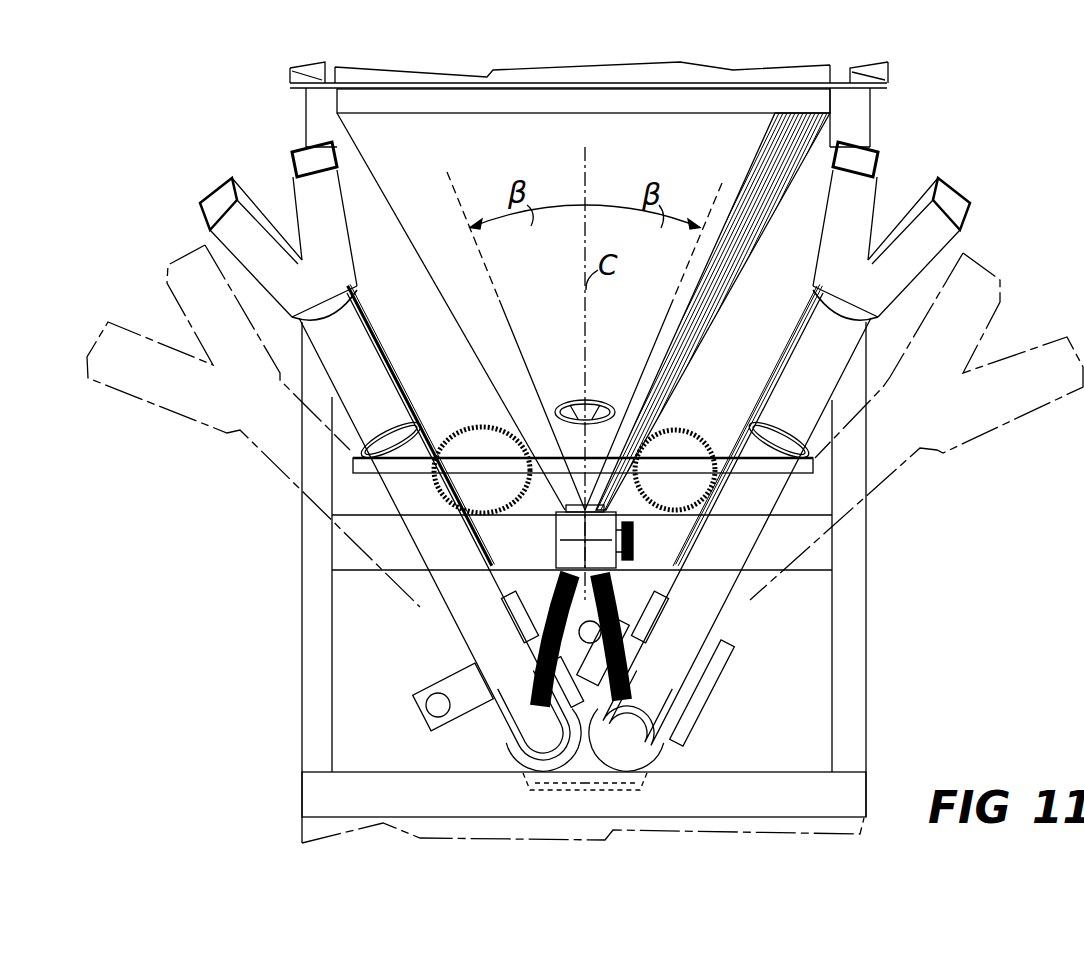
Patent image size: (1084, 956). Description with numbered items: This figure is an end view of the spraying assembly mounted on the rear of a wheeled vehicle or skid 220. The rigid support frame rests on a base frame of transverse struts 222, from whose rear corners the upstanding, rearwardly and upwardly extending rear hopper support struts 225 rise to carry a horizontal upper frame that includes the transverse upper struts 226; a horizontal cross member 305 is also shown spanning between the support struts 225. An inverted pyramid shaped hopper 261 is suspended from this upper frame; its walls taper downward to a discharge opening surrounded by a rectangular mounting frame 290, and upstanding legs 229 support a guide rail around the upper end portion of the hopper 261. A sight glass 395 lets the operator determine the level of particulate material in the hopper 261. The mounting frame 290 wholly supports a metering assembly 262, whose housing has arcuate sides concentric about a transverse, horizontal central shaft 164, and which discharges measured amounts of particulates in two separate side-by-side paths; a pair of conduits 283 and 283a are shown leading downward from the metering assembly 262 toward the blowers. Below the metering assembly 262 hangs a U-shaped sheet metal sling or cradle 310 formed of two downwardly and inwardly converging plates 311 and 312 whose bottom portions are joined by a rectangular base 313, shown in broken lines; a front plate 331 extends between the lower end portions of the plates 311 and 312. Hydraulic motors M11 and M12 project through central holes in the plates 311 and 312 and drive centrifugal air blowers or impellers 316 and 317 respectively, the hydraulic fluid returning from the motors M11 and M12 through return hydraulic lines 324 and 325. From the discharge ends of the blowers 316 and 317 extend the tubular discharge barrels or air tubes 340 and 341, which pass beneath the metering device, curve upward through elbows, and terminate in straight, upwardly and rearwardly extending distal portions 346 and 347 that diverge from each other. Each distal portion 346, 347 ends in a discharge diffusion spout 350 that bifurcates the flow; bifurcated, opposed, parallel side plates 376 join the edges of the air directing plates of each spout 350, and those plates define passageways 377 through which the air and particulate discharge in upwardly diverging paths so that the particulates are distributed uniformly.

The central shaft 164 is at (634, 538).
The wheeled vehicle 220 is at (782, 812).
The transverse struts 222 is at (420, 805).
The rear hopper support struts 225 is at (302, 528).
The transverse upper struts 226 is at (712, 110).
The upstanding legs 229 is at (290, 74).
The hopper 261 is at (476, 148).
The metering assembly 262 is at (556, 550).
The left hose 283 is at (548, 643).
The right hose 283a is at (630, 633).
The rectangular mounting frame 290 is at (560, 525).
The shelf 305 is at (332, 572).
The blower supporting sling 310 is at (720, 630).
The sheet metal plate 311 is at (510, 765).
The sheet metal plate 312 is at (665, 763).
The rectangular base 313 is at (640, 793).
The centrifugal air blower 316 is at (500, 612).
The centrifugal air blower 317 is at (722, 684).
The return hydraulic line 324 is at (500, 436).
The return hydraulic line 325 is at (658, 445).
The front plate 331 is at (548, 793).
The discharge barrel 340 is at (390, 362).
The discharge barrel 341 is at (786, 360).
The discharge distal portion 346 is at (365, 296).
The discharge distal portion 347 is at (814, 318).
The discharge diffusion spout 350 is at (918, 192).
The side plates 376 is at (300, 150).
The passageway 377 is at (222, 192).
The sight glass 395 is at (587, 400).
The hydraulic motor M11 is at (474, 703).
The hydraulic motor M12 is at (618, 680).